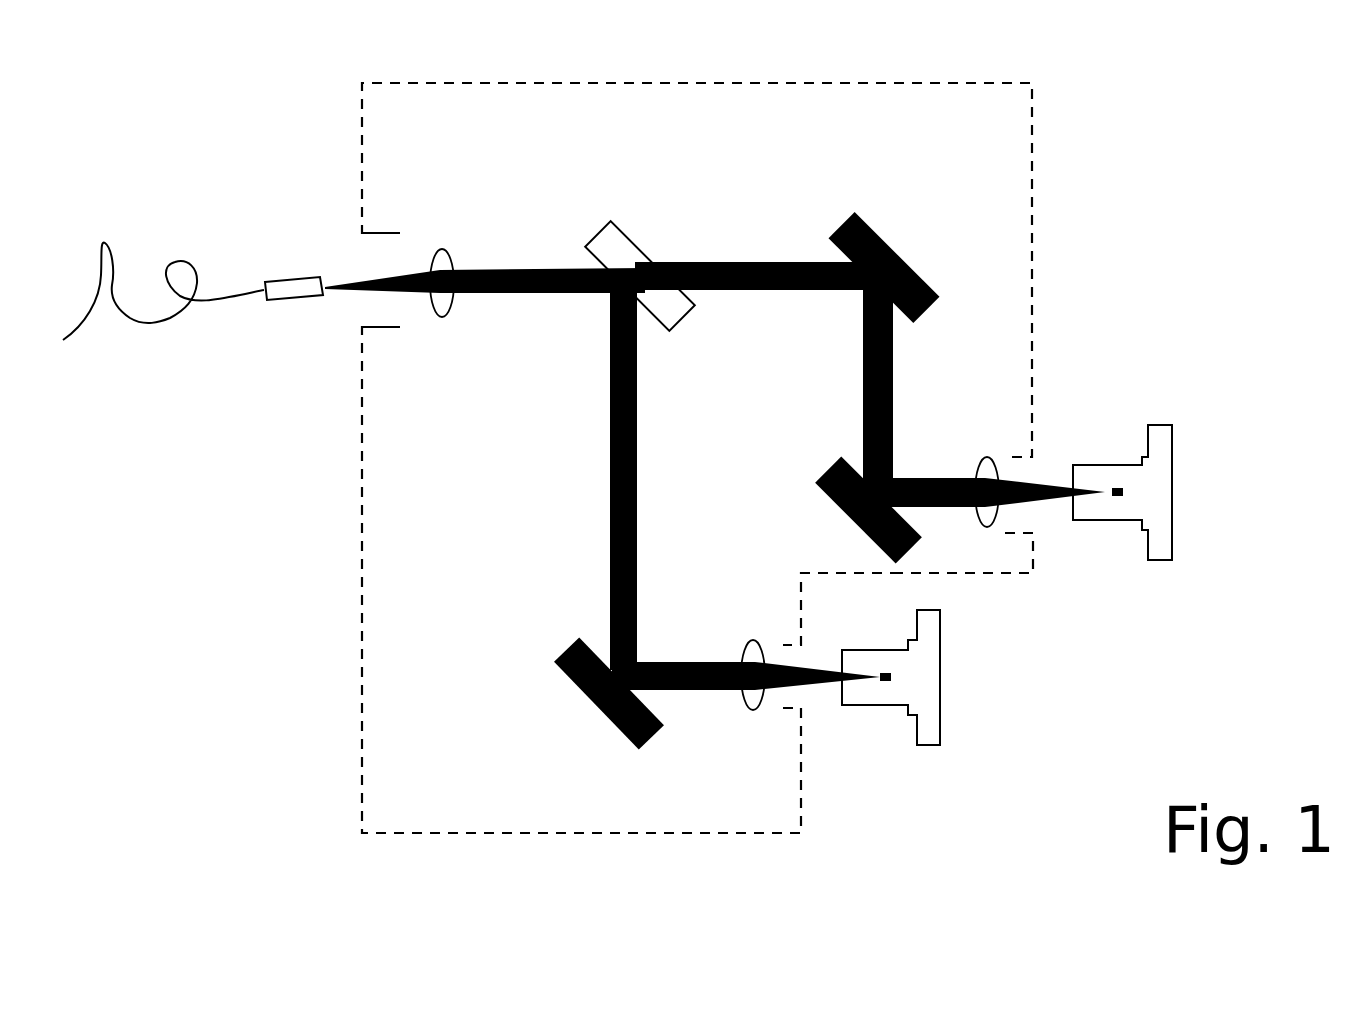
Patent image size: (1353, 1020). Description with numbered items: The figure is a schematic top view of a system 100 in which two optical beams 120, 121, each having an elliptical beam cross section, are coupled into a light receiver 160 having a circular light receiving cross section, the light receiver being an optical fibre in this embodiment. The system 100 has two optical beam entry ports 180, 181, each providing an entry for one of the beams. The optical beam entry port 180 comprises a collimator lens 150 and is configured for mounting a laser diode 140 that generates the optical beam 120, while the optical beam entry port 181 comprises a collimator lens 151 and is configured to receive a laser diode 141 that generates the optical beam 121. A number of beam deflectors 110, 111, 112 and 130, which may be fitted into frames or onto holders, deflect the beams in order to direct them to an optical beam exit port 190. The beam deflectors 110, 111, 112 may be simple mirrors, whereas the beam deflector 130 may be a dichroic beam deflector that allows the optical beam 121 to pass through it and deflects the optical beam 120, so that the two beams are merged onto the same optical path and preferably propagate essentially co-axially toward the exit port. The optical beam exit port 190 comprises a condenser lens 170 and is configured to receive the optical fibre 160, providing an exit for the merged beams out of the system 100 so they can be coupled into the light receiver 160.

The system 100 is at (962, 61).
The optical beam exit port 190 is at (336, 199).
The light receiver 160 is at (272, 302).
The condenser lens 170 is at (452, 252).
The dichroic beam deflector 130 is at (637, 235).
The beam deflector 111 is at (885, 237).
The optical beam 121 is at (863, 390).
The optical beam 120 is at (610, 412).
The beam deflector 110 is at (843, 517).
The beam deflector 112 is at (558, 667).
The collimator lens 151 is at (988, 458).
The collimator lens 150 is at (753, 708).
The laser diode 141 is at (1160, 423).
The laser diode 140 is at (940, 700).
The optical beam entry port 181 is at (1043, 517).
The optical beam entry port 180 is at (812, 705).